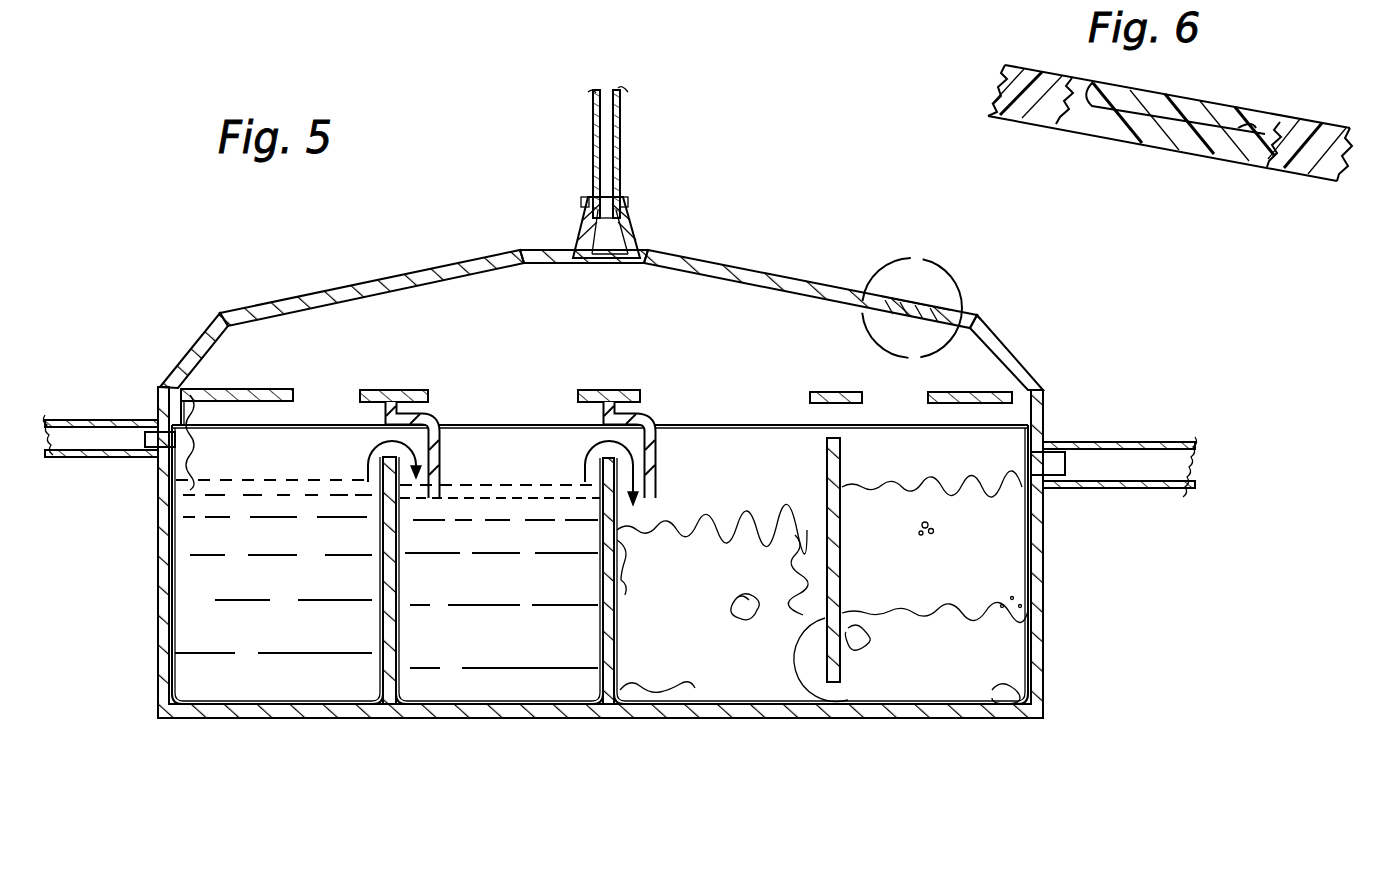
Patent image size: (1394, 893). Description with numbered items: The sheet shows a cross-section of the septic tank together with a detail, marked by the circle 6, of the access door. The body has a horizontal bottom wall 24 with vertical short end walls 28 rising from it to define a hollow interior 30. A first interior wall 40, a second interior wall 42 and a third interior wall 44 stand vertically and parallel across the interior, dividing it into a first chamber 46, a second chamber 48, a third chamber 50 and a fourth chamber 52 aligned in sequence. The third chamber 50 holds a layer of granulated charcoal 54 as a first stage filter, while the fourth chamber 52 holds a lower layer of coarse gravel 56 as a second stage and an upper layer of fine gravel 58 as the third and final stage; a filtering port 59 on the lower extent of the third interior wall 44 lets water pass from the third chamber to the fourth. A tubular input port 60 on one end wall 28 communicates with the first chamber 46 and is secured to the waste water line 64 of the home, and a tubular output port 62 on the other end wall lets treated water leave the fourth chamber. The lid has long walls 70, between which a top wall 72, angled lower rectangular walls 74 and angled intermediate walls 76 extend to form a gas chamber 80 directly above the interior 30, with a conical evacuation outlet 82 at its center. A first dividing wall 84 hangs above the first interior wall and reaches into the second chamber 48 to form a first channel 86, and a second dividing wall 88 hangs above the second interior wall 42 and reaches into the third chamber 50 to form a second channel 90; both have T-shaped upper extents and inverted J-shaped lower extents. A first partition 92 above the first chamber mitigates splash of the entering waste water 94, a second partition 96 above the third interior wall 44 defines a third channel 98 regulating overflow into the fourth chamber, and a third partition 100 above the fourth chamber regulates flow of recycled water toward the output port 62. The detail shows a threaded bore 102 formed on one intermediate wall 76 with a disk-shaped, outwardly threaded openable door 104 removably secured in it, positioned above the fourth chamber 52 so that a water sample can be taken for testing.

In FIG. 5, the detail area of FIG. 6 is at (945, 275).
In FIG. 5, the bottom wall 24 is at (602, 628).
In FIG. 5, the end walls 28 is at (160, 632).
In FIG. 5, the hollow interior 30 is at (752, 430).
In FIG. 5, the first interior wall 40 is at (390, 645).
In FIG. 5, the second interior wall 42 is at (602, 630).
In FIG. 5, the third interior wall 44 is at (847, 690).
In FIG. 5, the first chamber 46 is at (275, 612).
In FIG. 5, the second chamber 48 is at (478, 625).
In FIG. 5, the third chamber 50 is at (738, 652).
In FIG. 5, the fourth chamber 52 is at (942, 457).
In FIG. 5, the layer of granulated charcoal 54 is at (745, 545).
In FIG. 5, the lower layer of coarse gravel 56 is at (1050, 716).
In FIG. 5, the upper layer of fine gravel 58 is at (1000, 545).
In FIG. 5, the filtering port 59 is at (862, 712).
In FIG. 5, the tubular input port 60 is at (158, 455).
In FIG. 5, the tubular output port 62 is at (1048, 446).
In FIG. 5, the waste water line 64 is at (108, 420).
In FIG. 5, the long walls 70 is at (616, 289).
In FIG. 5, the top wall 72 is at (528, 245).
In FIG. 5, the angled lower rectangular walls 74 is at (180, 368).
In FIG. 5, the angled intermediate walls 76 is at (370, 298).
In FIG. 5, the gas chamber 80 is at (648, 322).
In FIG. 5, the conical evacuation outlet 82 is at (630, 220).
In FIG. 5, the first dividing wall 84 is at (403, 390).
In FIG. 5, the first channel 86 is at (442, 440).
In FIG. 5, the second dividing wall 88 is at (612, 392).
In FIG. 5, the second channel 90 is at (656, 440).
In FIG. 5, the first horizontal rectangular planar partition 92 is at (262, 390).
In FIG. 5, the waste water 94 is at (195, 420).
In FIG. 5, the second horizontal rectangular planar partition 96 is at (812, 400).
In FIG. 5, the third channel 98 is at (845, 420).
In FIG. 5, the third horizontal rectangular planar partition 100 is at (986, 368).
In FIG. 6, the threaded bore 102 is at (1310, 124).
In FIG. 6, the openable door 104 is at (1095, 80).